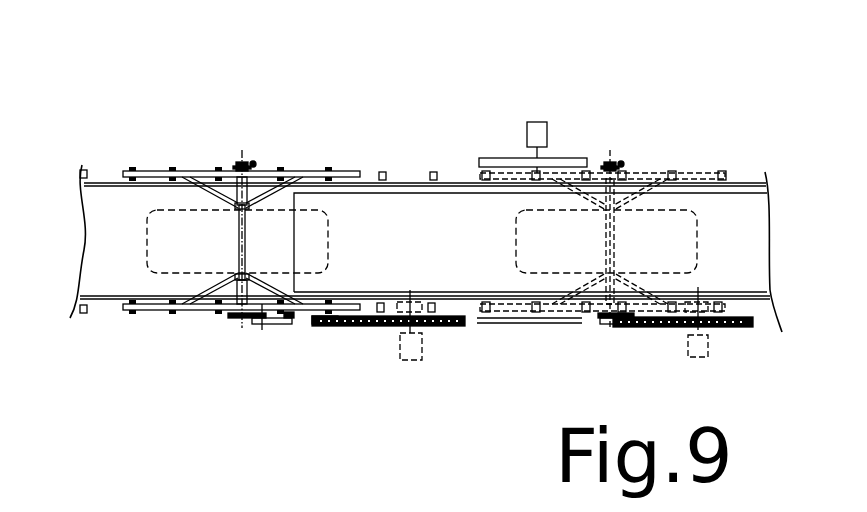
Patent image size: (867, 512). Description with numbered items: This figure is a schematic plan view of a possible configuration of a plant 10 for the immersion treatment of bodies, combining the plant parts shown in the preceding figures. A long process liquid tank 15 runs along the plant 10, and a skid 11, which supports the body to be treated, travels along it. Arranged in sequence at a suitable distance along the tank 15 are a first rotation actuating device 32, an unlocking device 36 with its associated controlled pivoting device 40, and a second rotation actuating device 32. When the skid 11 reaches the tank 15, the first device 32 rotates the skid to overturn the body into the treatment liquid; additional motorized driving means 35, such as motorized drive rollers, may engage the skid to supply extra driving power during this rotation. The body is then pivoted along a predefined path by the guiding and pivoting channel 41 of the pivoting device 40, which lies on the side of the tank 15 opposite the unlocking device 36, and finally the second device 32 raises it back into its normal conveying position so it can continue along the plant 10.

The plant 10 is at (178, 98).
The skid 11 is at (192, 319).
The process liquid tank 15 is at (387, 218).
The rotation actuating device 32 is at (359, 335).
The motorized driving means 35 is at (422, 342).
The unlocking device 36 is at (517, 329).
The controlled pivoting device 40 is at (565, 130).
The guiding and pivoting channel 41 is at (503, 158).